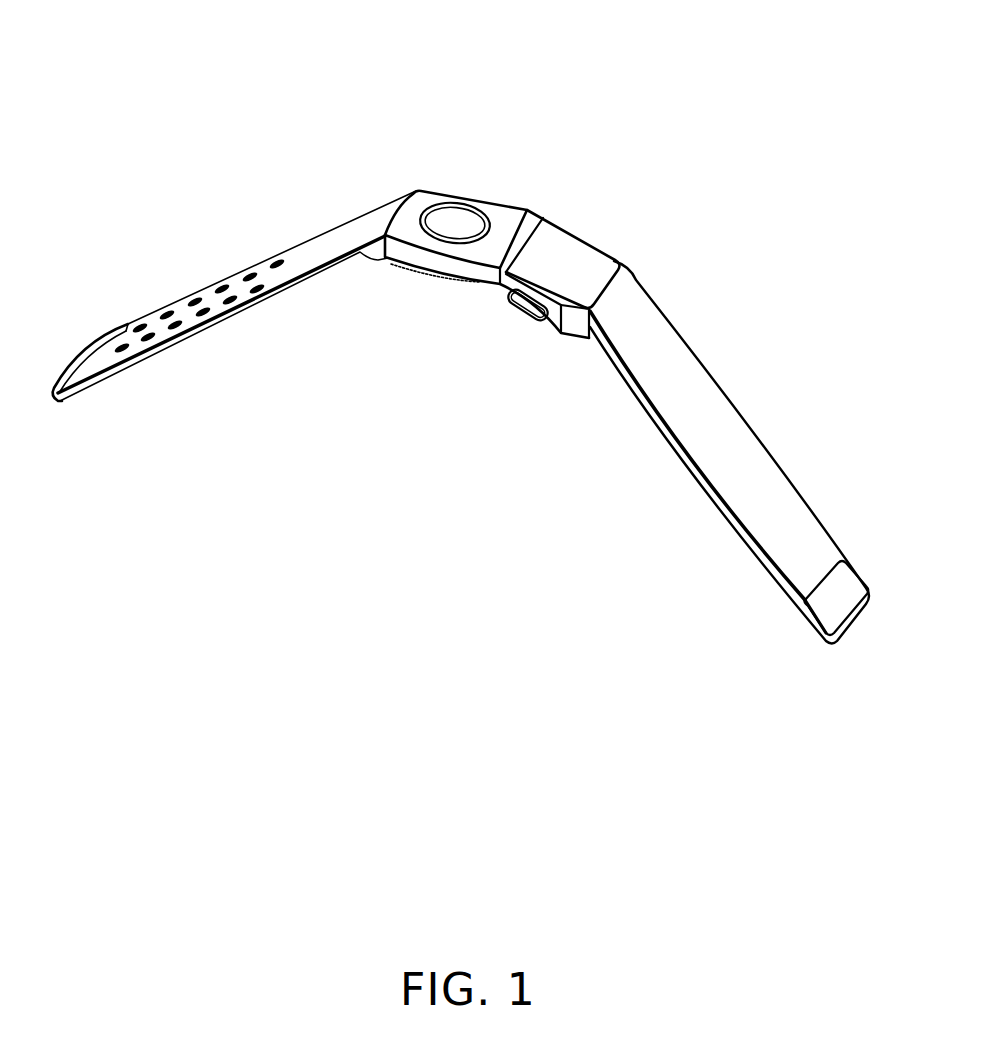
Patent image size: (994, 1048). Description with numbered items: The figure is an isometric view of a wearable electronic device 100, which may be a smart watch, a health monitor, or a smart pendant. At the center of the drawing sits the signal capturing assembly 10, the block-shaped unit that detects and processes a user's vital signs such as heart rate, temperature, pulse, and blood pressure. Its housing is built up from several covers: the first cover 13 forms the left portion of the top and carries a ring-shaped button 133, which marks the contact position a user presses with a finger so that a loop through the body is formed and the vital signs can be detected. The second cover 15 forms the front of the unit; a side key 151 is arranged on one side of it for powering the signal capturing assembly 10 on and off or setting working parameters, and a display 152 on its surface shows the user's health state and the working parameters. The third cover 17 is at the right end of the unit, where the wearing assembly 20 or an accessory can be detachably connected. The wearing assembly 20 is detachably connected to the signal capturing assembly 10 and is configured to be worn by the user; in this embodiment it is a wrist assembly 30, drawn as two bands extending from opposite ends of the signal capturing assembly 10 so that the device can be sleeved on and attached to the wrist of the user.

The wearable electronic device 100 is at (391, 48).
The signal capturing assembly 10 is at (541, 205).
The first cover 13 is at (433, 198).
The ring-shaped button 133 is at (467, 207).
The second cover 15 is at (506, 296).
The side key 151 is at (528, 314).
The display 152 is at (590, 252).
The third cover 17 is at (572, 323).
The wearing assembly 20 is at (308, 236).
The wrist assembly 30 is at (153, 350).